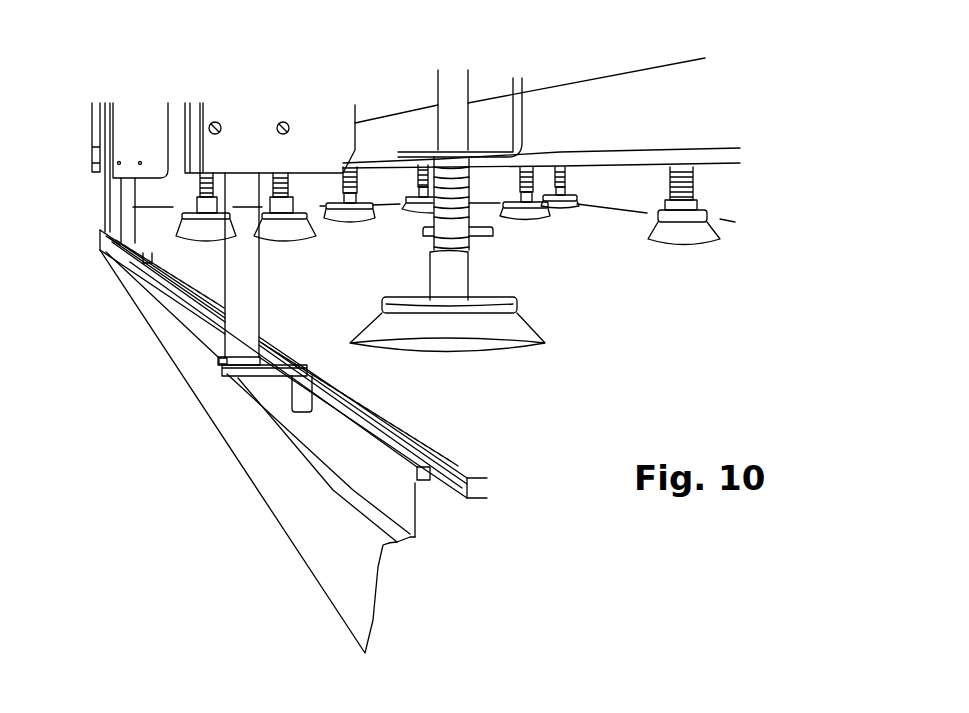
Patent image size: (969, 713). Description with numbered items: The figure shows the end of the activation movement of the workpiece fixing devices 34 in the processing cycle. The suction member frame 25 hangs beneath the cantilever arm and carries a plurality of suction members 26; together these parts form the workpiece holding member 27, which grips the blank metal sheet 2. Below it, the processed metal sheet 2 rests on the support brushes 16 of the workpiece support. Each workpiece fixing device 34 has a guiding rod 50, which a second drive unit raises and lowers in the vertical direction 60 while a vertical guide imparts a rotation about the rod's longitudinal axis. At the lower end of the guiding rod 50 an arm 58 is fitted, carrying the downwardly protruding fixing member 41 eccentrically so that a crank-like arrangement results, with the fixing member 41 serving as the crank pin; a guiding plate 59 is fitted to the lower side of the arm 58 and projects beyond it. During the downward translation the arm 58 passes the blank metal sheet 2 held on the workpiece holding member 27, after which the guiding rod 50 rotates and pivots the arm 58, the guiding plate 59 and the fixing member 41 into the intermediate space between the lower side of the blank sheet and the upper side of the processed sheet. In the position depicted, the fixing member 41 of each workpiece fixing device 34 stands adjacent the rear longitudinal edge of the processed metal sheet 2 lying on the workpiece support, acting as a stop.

The workpiece fixing device 34 is at (220, 96).
The suction member frame 25 is at (718, 130).
The workpiece holding member 27 is at (598, 261).
The suction member 26 is at (522, 330).
The vertical direction (double-headed arrow) 60 is at (290, 255).
The guiding rod 50 is at (238, 290).
The arm 58 is at (220, 364).
The guiding plate 59 is at (222, 374).
The fixing member 41 is at (293, 393).
The metal sheet 2 is at (480, 487).
The support brush 16 is at (415, 517).